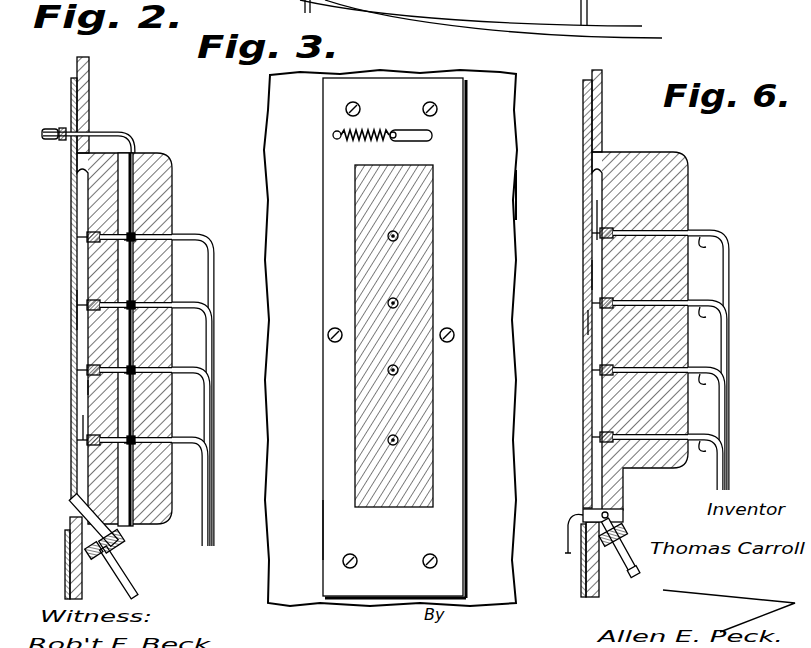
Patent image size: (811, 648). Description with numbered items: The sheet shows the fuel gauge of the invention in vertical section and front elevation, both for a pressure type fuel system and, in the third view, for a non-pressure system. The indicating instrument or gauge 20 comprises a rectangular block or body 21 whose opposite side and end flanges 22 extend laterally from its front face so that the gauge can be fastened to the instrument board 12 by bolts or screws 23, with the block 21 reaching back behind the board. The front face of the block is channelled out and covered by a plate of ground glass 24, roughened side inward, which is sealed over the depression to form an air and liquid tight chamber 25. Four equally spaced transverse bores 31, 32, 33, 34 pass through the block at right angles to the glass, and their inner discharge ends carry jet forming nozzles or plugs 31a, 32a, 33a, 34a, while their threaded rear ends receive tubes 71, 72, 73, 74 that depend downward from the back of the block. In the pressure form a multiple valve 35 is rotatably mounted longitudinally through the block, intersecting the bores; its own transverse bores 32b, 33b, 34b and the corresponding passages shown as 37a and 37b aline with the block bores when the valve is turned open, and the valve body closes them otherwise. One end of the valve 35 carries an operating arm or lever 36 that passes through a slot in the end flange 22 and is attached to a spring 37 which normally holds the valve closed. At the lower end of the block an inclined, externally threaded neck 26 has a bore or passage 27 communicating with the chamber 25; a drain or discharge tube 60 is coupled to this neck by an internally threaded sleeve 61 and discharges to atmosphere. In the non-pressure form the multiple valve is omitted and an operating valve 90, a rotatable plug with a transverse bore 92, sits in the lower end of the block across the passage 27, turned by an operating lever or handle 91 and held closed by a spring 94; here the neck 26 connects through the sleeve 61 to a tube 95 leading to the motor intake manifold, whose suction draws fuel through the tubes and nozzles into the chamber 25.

In FIG. 2, the instrument board 12 is at (70, 574).
In FIG. 3, the instrument board 12 is at (494, 192).
In FIG. 6, the instrument board 12 is at (602, 113).
In FIG. 2, the indicating instrument or gauge 20 is at (71, 312).
In FIG. 3, the indicating instrument or gauge 20 is at (453, 173).
In FIG. 6, the indicating instrument or gauge 20 is at (592, 272).
In FIG. 2, the block or body 21 is at (160, 181).
In FIG. 6, the block or body 21 is at (672, 174).
In FIG. 2, the flanges 22 is at (71, 96).
In FIG. 3, the flanges 22 is at (324, 535).
In FIG. 6, the flanges 22 is at (590, 103).
In FIG. 3, the bolts or screws 23 is at (438, 110).
In FIG. 2, the plate of ground glass 24 is at (80, 392).
In FIG. 3, the plate of ground glass 24 is at (382, 213).
In FIG. 6, the plate of ground glass 24 is at (590, 318).
In FIG. 2, the chamber 25 is at (80, 426).
In FIG. 6, the chamber 25 is at (597, 222).
In FIG. 2, the neck 26 is at (123, 540).
In FIG. 6, the neck 26 is at (636, 536).
In FIG. 2, the bore or passage 27 is at (72, 500).
In FIG. 6, the bore or passage 27 is at (624, 527).
In FIG. 2, the block bore 31 is at (166, 430).
In FIG. 6, the block bore 31 is at (680, 432).
In FIG. 2, the block bore 32 is at (165, 366).
In FIG. 6, the block bore 32 is at (666, 372).
In FIG. 2, the block bore 33 is at (164, 300).
In FIG. 6, the block bore 33 is at (668, 300).
In FIG. 2, the block bore 34 is at (162, 234).
In FIG. 6, the block bore 34 is at (660, 232).
In FIG. 3, the jet forming nozzle or plug 31a is at (390, 441).
In FIG. 6, the jet forming nozzle or plug 31a is at (600, 436).
In FIG. 2, the jet forming nozzle or plug 32a is at (88, 370).
In FIG. 3, the jet forming nozzle or plug 32a is at (390, 371).
In FIG. 6, the jet forming nozzle or plug 32a is at (600, 371).
In FIG. 2, the jet forming nozzle or plug 33a is at (88, 303).
In FIG. 3, the jet forming nozzle or plug 33a is at (390, 302).
In FIG. 6, the jet forming nozzle or plug 33a is at (600, 304).
In FIG. 2, the jet forming nozzle or plug 34a is at (88, 235).
In FIG. 3, the jet forming nozzle or plug 34a is at (390, 236).
In FIG. 6, the jet forming nozzle or plug 34a is at (600, 237).
In FIG. 2, the valve bore 32b is at (130, 375).
In FIG. 2, the valve bore 33b is at (130, 308).
In FIG. 2, the valve bore 34b is at (130, 240).
In FIG. 2, the multiple valve 35 is at (137, 158).
In FIG. 2, the operating arm or lever 36 is at (95, 131).
In FIG. 3, the operating arm or lever 36 is at (395, 133).
In FIG. 2, the spring 37 is at (62, 140).
In FIG. 3, the spring 37 is at (356, 133).
In FIG. 2, the terminal screw 37a is at (88, 440).
In FIG. 2, the contact spring 37b is at (130, 445).
In FIG. 2, the drain or discharge tube 60 is at (118, 556).
In FIG. 2, the internally threaded sleeve 61 is at (92, 560).
In FIG. 2, the tube 71 is at (190, 433).
In FIG. 6, the tube 71 is at (704, 448).
In FIG. 2, the tube 72 is at (188, 373).
In FIG. 6, the tube 72 is at (702, 381).
In FIG. 2, the tube 73 is at (190, 308).
In FIG. 6, the tube 73 is at (702, 313).
In FIG. 2, the tube 74 is at (190, 241).
In FIG. 6, the tube 74 is at (708, 241).
In FIG. 6, the operating valve 90 is at (590, 512).
In FIG. 6, the operating lever or handle 91 is at (568, 514).
In FIG. 6, the transverse bore 92 is at (620, 508).
In FIG. 6, the spring 94 is at (566, 532).
In FIG. 6, the tube 95 is at (632, 573).